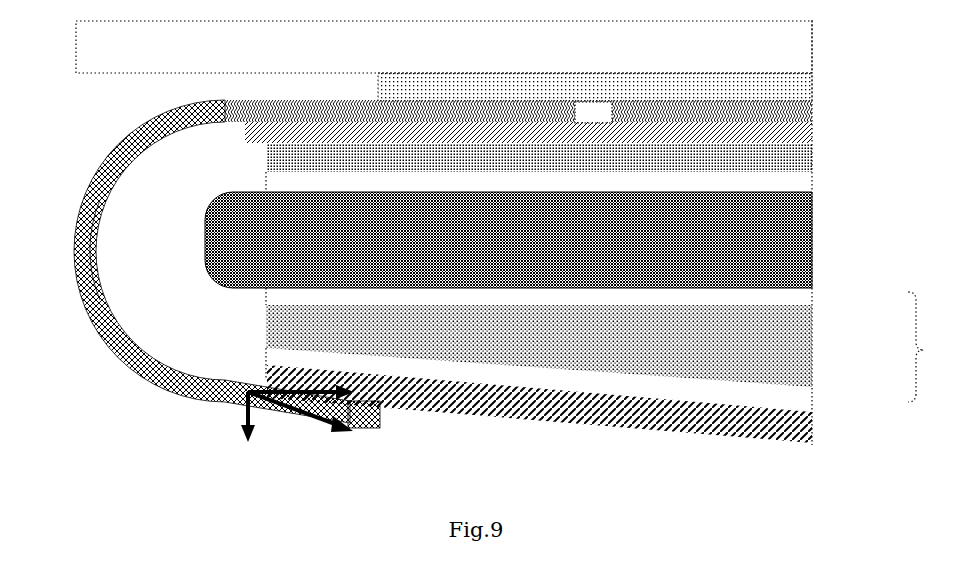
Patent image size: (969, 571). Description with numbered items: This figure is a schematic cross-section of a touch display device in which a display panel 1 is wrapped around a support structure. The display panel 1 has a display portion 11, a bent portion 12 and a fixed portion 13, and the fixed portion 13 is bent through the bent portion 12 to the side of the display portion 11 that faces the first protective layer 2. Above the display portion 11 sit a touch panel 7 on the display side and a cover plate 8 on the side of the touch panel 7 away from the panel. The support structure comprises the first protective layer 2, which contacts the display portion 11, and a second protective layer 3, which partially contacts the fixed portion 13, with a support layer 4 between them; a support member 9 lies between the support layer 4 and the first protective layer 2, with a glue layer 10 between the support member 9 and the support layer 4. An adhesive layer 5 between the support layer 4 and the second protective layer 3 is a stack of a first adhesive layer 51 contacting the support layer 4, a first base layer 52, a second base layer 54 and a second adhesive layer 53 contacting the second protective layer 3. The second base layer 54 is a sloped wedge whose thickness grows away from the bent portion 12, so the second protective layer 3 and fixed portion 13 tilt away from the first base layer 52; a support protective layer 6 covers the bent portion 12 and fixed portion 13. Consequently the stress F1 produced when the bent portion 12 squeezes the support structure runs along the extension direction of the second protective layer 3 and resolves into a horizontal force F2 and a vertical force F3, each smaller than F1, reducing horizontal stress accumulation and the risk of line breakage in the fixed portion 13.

The display panel 1 is at (812, 113).
The first protective layer 2 is at (812, 135).
The second protective layer 3 is at (812, 425).
The support layer 4 is at (762, 243).
The adhesive layer 5 is at (924, 347).
The support protective layer 6 is at (80, 228).
The touch panel 7 is at (812, 87).
The cover plate 8 is at (762, 47).
The support member 9 is at (812, 158).
The glue layer 10 is at (762, 183).
The display portion 11 is at (593, 112).
The bent portion 12 is at (98, 246).
The fixed portion 13 is at (365, 430).
The first adhesive layer 51 is at (762, 298).
The first base layer 52 is at (812, 330).
The second adhesive layer 53 is at (762, 398).
The second base layer 54 is at (812, 363).
The stress F1 is at (300, 422).
The horizontal force F2 is at (301, 376).
The vertical force F3 is at (248, 428).